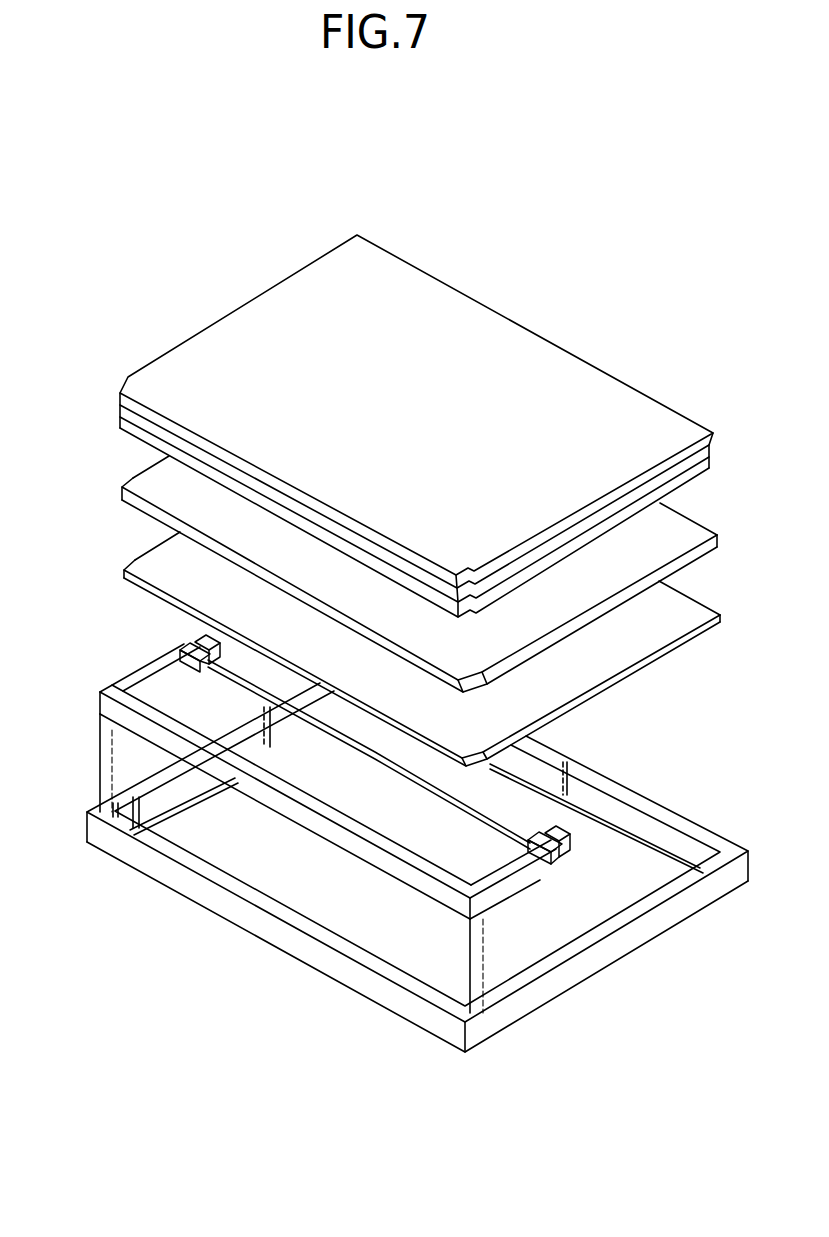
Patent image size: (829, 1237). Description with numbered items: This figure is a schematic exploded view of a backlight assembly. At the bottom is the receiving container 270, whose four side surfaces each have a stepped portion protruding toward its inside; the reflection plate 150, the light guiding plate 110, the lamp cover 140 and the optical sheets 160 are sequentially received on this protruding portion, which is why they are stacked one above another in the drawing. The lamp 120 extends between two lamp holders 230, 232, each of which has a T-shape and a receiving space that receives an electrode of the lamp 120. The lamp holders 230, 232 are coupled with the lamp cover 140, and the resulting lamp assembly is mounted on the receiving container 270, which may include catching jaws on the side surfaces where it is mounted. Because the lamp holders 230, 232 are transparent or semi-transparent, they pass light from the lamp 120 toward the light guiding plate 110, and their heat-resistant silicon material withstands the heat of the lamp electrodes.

The optical sheets 160 is at (112, 372).
The light guiding plate 110 is at (126, 496).
The reflection plate 150 is at (127, 574).
The lamp cover 140 is at (104, 706).
The lamp holder 230 is at (180, 652).
The lamp holder 232 is at (555, 862).
The lamp 120 is at (376, 755).
The receiving container 270 is at (640, 942).